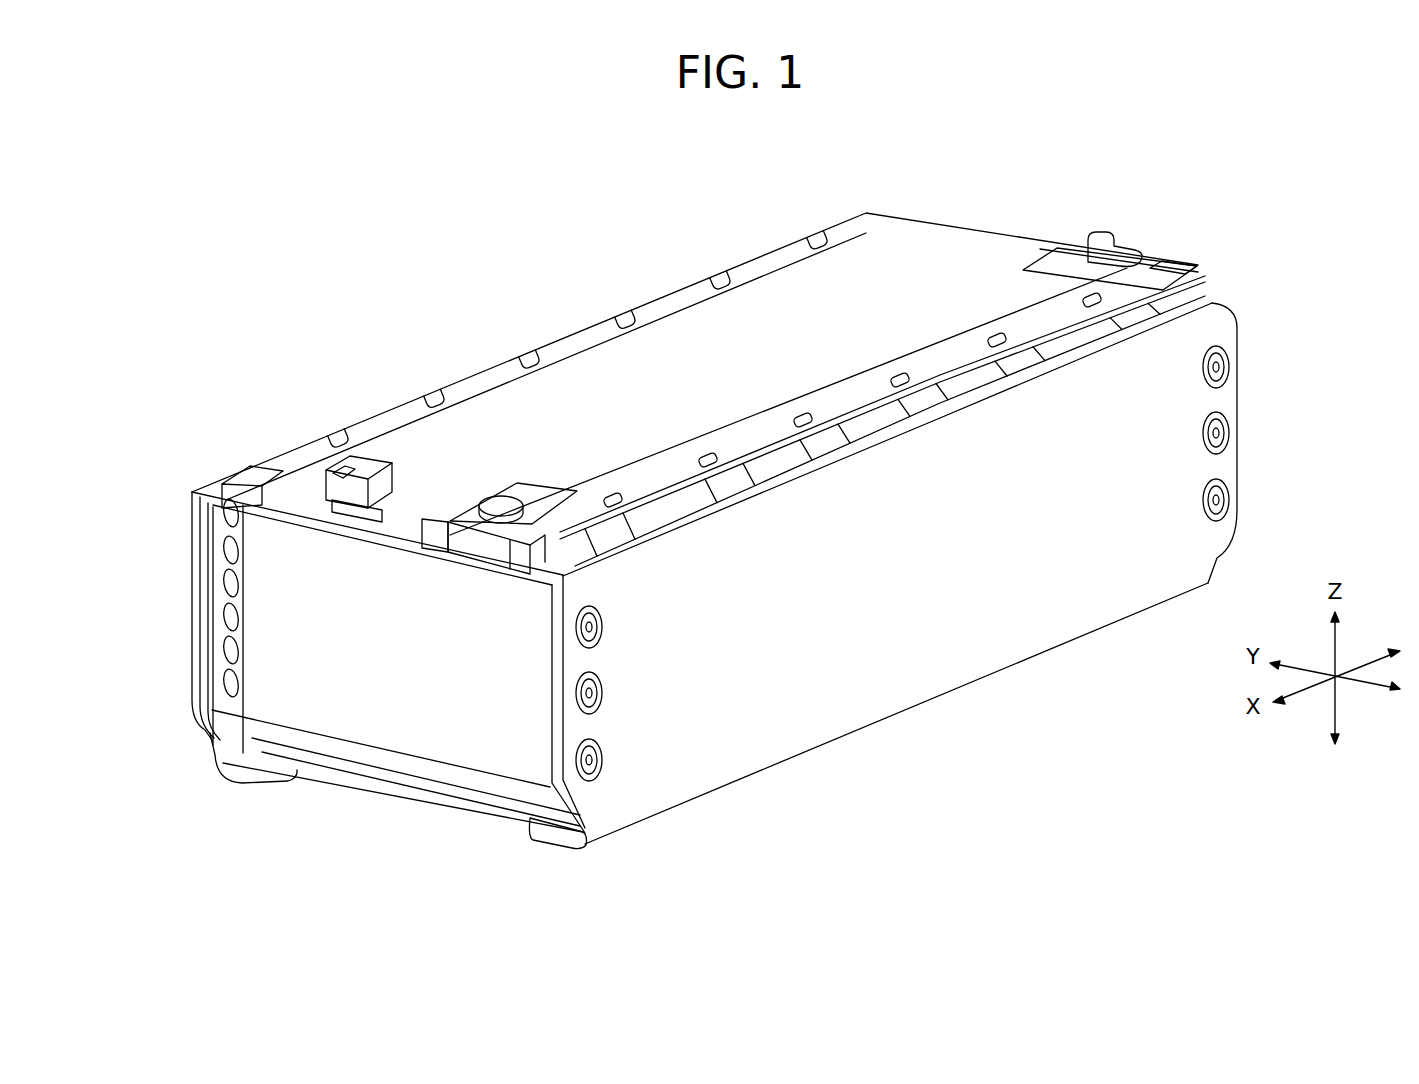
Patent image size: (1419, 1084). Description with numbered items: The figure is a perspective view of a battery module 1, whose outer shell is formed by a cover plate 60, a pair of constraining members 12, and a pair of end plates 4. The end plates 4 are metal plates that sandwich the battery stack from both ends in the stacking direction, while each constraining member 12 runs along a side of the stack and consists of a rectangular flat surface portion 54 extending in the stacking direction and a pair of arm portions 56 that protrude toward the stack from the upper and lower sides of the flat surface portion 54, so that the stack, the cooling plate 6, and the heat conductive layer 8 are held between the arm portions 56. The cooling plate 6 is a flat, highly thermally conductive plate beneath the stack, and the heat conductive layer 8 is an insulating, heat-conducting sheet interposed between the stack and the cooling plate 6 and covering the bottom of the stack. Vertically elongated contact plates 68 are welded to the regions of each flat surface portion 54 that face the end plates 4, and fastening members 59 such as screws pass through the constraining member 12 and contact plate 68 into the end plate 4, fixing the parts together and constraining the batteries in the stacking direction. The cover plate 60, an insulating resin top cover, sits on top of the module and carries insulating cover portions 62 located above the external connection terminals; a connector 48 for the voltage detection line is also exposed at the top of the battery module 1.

The battery module 1 is at (618, 938).
The end plate 4 is at (358, 735).
The cooling plate 6 is at (467, 805).
The heat conductive layer 8 is at (423, 787).
The constraining member 12 is at (197, 490).
The connector 48 is at (325, 442).
The flat surface portion 54 is at (195, 632).
The arm portion 56 is at (242, 478).
The fastening member 59 is at (1240, 506).
The cover plate 60 is at (940, 218).
The insulating cover portion 62 is at (1147, 233).
The contact plate 68 is at (197, 578).